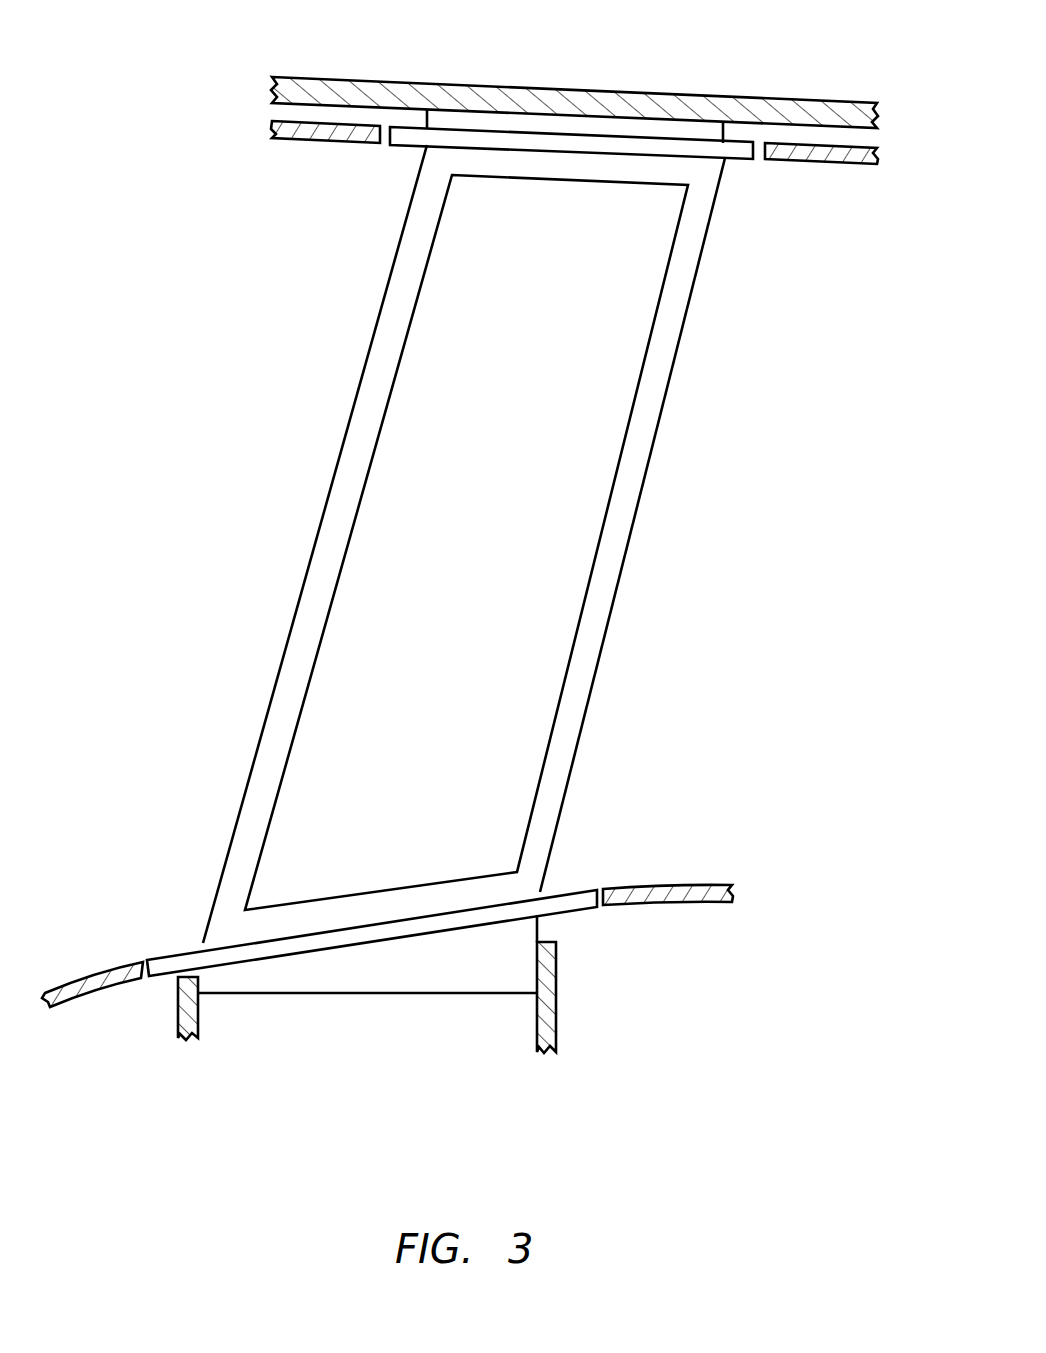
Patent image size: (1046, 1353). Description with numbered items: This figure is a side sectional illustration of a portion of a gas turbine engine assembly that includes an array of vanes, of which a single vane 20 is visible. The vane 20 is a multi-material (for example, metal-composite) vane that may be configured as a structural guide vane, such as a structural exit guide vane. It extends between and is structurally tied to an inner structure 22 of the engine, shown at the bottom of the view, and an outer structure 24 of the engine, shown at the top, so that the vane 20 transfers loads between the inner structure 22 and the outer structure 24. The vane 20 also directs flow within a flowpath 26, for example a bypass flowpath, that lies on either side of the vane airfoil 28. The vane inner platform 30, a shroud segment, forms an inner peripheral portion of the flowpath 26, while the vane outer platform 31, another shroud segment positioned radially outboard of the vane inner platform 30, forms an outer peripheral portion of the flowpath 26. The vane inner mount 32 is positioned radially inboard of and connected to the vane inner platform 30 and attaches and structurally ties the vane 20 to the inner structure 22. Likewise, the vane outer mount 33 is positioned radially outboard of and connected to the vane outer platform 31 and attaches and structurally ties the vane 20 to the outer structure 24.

The vane 20 is at (323, 405).
The inner structure 22 is at (175, 1050).
The outer structure 24 is at (744, 96).
The flowpath 26 is at (197, 605).
The vane airfoil 28 is at (671, 392).
The vane inner platform 30 is at (578, 887).
The vane outer platform 31 is at (739, 172).
The vane inner mount 32 is at (401, 997).
The vane outer mount 33 is at (584, 121).